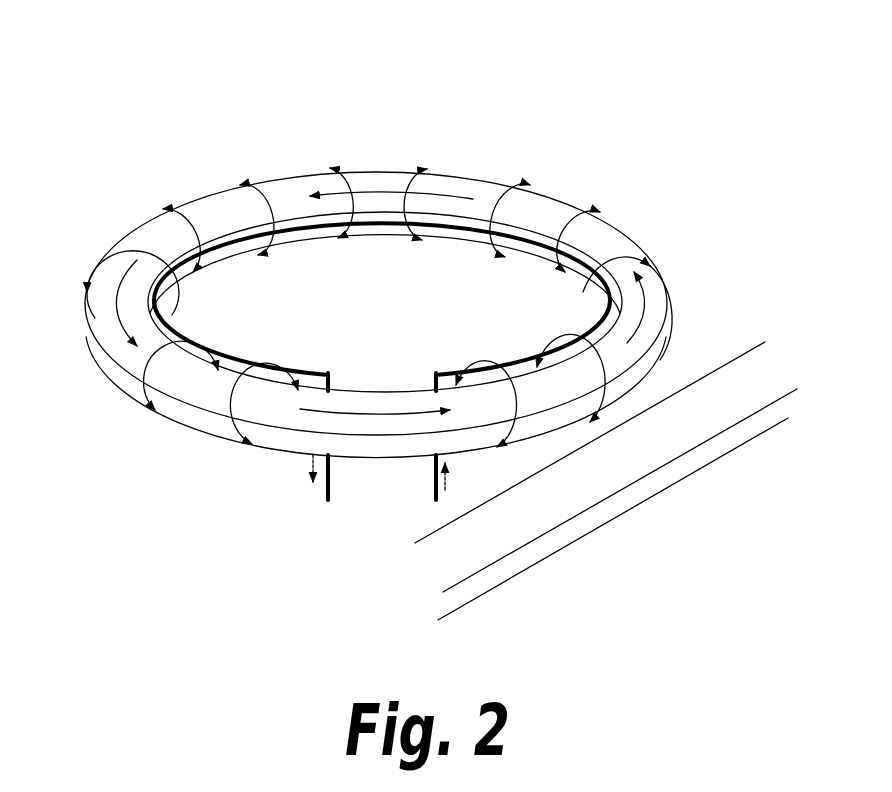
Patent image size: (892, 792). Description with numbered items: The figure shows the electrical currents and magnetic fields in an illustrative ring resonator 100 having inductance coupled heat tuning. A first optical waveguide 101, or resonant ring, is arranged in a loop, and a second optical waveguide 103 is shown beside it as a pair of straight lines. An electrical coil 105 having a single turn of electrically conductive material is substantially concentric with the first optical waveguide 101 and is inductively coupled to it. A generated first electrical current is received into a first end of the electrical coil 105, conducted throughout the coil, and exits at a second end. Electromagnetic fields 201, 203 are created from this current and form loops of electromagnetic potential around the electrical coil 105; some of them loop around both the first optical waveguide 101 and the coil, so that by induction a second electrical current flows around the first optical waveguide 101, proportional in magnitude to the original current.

The ring resonator 100 is at (114, 122).
The first optical waveguide 101 is at (212, 398).
The second optical waveguide 103 is at (698, 473).
The electrical coil 105 is at (298, 232).
The electromagnetic field 201 is at (271, 225).
The electromagnetic field 203 is at (480, 352).